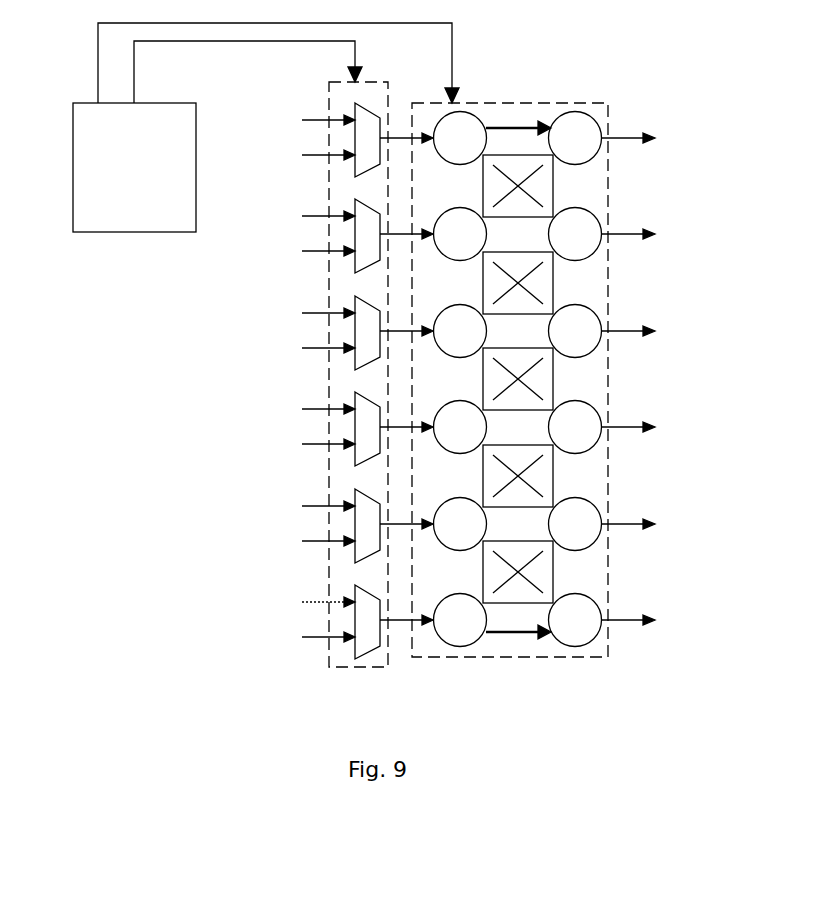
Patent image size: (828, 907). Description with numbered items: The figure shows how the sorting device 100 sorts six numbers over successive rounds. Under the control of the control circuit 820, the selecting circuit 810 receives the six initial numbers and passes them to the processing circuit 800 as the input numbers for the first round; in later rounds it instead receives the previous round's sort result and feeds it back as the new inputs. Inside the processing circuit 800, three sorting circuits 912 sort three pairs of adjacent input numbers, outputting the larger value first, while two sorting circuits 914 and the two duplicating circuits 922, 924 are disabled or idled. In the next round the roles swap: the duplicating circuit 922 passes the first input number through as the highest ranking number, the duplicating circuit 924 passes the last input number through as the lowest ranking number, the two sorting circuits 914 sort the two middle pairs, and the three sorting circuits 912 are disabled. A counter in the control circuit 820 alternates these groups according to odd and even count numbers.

The sorting device 100 is at (89, 726).
The processing circuit 800 is at (609, 118).
The selecting circuit 810 is at (327, 104).
The control circuit 820 is at (137, 233).
The sorting circuits 912 is at (553, 188).
The sorting circuits 914 is at (553, 285).
The duplicating circuit 922 is at (513, 126).
The duplicating circuit 924 is at (515, 638).